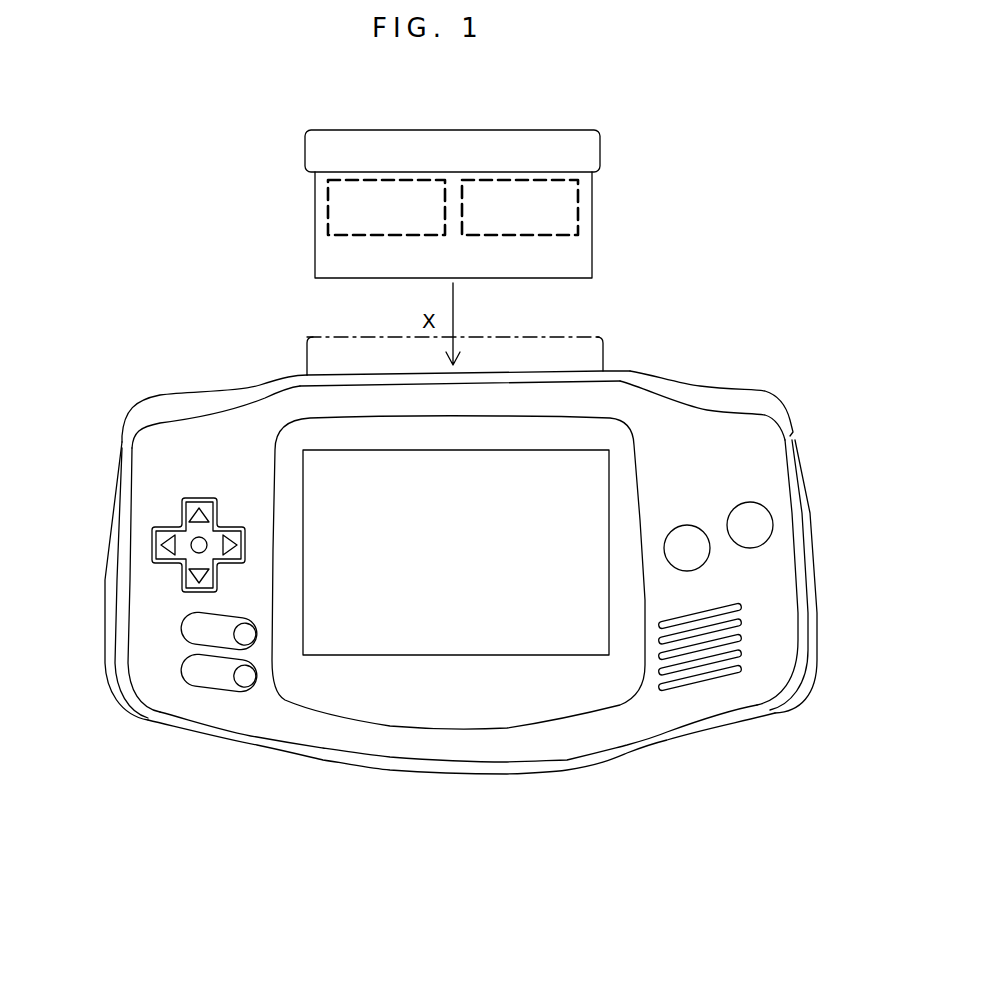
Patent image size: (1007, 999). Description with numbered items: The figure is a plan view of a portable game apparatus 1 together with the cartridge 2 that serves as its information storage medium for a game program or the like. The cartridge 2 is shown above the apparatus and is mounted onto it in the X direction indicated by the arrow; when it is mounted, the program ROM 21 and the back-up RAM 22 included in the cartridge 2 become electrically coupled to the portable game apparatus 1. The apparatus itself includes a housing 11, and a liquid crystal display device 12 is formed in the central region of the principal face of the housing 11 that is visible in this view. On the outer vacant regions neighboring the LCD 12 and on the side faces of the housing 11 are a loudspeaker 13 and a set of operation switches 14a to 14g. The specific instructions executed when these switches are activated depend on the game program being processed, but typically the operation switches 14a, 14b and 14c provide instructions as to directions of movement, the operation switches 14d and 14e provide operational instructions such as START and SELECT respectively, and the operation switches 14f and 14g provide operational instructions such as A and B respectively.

The portable game apparatus 1 is at (428, 547).
The cartridge 2 is at (455, 199).
The program ROM 21 is at (318, 212).
The back-up RAM 22 is at (580, 202).
The housing 11 is at (470, 763).
The liquid crystal display (LCD) device 12 is at (562, 655).
The loudspeaker 13 is at (687, 670).
The operation switch 14a is at (755, 389).
The operation switch 14b is at (190, 393).
The operation switch 14c is at (152, 540).
The operation switch 14d is at (258, 645).
The operation switch 14e is at (255, 689).
The operation switch 14f is at (750, 548).
The operation switch 14g is at (685, 525).